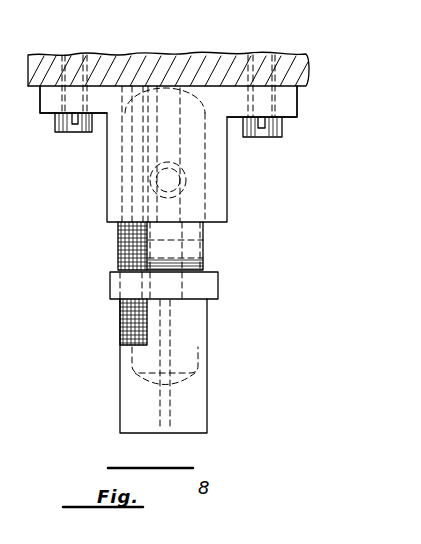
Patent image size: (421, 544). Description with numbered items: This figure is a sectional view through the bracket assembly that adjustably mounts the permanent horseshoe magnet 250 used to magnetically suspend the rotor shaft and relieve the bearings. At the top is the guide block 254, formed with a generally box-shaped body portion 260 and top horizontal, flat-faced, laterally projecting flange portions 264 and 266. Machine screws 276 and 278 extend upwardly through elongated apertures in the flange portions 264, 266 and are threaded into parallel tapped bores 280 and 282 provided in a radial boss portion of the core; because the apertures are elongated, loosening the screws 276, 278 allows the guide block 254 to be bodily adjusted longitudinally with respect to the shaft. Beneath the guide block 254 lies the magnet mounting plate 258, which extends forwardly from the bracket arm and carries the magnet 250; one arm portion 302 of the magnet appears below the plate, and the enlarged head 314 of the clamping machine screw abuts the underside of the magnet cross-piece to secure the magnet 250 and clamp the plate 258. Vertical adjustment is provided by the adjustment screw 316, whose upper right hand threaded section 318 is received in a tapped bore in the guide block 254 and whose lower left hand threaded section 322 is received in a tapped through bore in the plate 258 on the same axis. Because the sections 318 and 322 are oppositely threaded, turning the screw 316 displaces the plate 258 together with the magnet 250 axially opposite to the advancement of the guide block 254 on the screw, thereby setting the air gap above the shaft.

The permanent horseshoe magnet 250 is at (211, 378).
The guide block 254 is at (232, 227).
The magnet mounting plate 258 is at (113, 289).
The body portion 260 is at (111, 222).
The flange portion 264 is at (41, 102).
The flange portion 266 is at (298, 103).
The machine screw 276 is at (88, 133).
The machine screw 278 is at (272, 136).
The tapped bore 280 is at (80, 64).
The tapped bore 282 is at (270, 62).
The arm portion 302 is at (201, 416).
The enlarged head 314 is at (134, 376).
The adjustment screw 316 is at (118, 260).
The upper right hand threaded section 318 is at (150, 227).
The lower left hand threaded section 322 is at (120, 340).